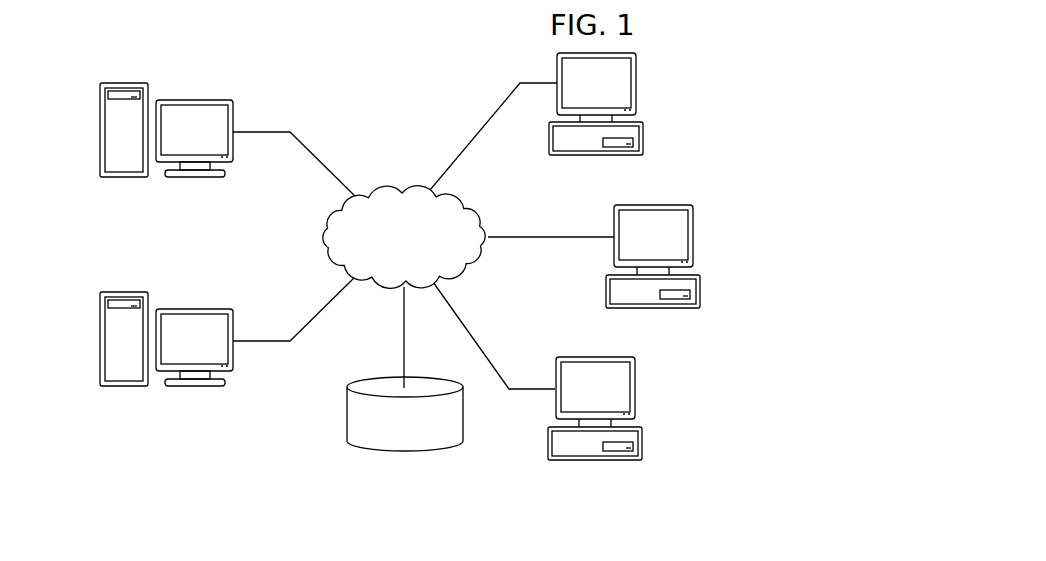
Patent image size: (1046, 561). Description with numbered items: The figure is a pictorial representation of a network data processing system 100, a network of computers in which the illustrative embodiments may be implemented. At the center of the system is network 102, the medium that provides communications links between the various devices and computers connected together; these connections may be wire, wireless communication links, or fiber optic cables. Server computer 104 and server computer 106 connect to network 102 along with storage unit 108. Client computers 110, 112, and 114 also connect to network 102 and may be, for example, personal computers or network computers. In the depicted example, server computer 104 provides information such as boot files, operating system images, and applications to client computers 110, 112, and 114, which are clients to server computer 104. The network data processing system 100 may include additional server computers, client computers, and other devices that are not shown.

The network data processing system 100 is at (296, 58).
The network 102 is at (398, 186).
The server computer 104 is at (100, 127).
The server computer 106 is at (100, 340).
The storage unit 108 is at (347, 415).
The client computer 110 is at (645, 138).
The client computer 112 is at (702, 291).
The client computer 114 is at (645, 440).